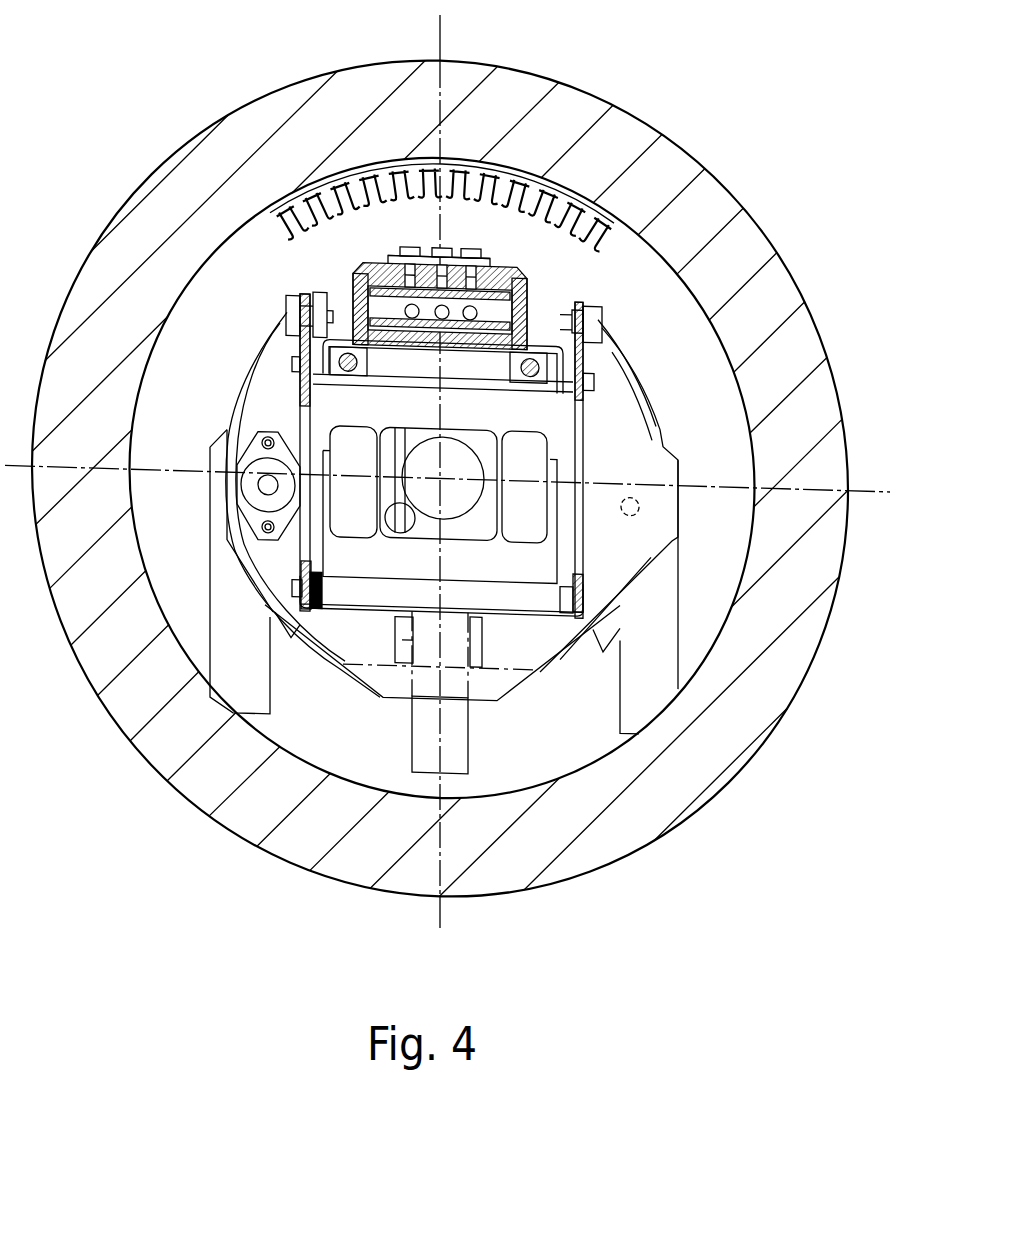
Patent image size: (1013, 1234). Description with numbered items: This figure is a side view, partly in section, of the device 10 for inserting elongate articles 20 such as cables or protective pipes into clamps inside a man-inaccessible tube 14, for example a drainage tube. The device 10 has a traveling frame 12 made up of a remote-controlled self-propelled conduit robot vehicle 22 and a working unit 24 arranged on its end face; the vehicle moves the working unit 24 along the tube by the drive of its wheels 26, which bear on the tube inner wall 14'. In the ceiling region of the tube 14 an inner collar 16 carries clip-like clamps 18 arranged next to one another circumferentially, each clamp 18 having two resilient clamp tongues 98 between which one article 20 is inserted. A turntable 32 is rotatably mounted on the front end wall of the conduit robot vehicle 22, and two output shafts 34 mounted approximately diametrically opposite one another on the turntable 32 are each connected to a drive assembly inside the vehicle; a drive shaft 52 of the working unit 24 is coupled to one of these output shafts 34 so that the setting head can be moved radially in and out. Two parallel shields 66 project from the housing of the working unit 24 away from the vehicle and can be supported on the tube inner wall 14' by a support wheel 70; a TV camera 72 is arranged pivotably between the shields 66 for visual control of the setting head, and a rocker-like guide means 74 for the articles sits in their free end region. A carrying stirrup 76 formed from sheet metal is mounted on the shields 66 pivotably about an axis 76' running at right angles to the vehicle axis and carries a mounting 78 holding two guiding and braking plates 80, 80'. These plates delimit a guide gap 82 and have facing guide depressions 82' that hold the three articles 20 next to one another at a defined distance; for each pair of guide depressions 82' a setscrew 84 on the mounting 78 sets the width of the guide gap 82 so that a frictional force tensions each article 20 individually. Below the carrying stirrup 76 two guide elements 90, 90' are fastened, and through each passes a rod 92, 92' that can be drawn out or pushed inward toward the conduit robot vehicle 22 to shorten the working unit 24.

The device 10 is at (262, 286).
The traveling frame 12 is at (240, 373).
The tube 14 is at (440, 478).
The tube inner wall 14' is at (442, 545).
The inner collar 16 is at (283, 221).
The clamp 18 is at (306, 165).
The elongate article 20 is at (550, 296).
The conduit robot vehicle 22 is at (222, 568).
The working unit 24 is at (604, 400).
The wheel 26 is at (220, 671).
The turntable 32 is at (610, 601).
The output shaft 34 is at (234, 508).
The drive shaft 52 is at (640, 506).
The shield 66 is at (300, 406).
The support wheel 70 is at (462, 744).
The TV camera 72 is at (466, 496).
The guide means 74 is at (532, 297).
The carrying stirrup 76 is at (271, 315).
The axis 76' is at (628, 342).
The mounting 78 is at (372, 267).
The guiding and braking plate 80 is at (440, 331).
The guiding and braking plate 80' is at (485, 279).
The guide gap 82 is at (340, 294).
The guide depression 82' is at (475, 298).
The setscrew 84 is at (448, 255).
The guide element 90 is at (440, 482).
The bearing pad 90' is at (463, 461).
The rod 92 is at (542, 391).
The bolt 92' is at (334, 388).
The clamp tongue 98 is at (345, 218).